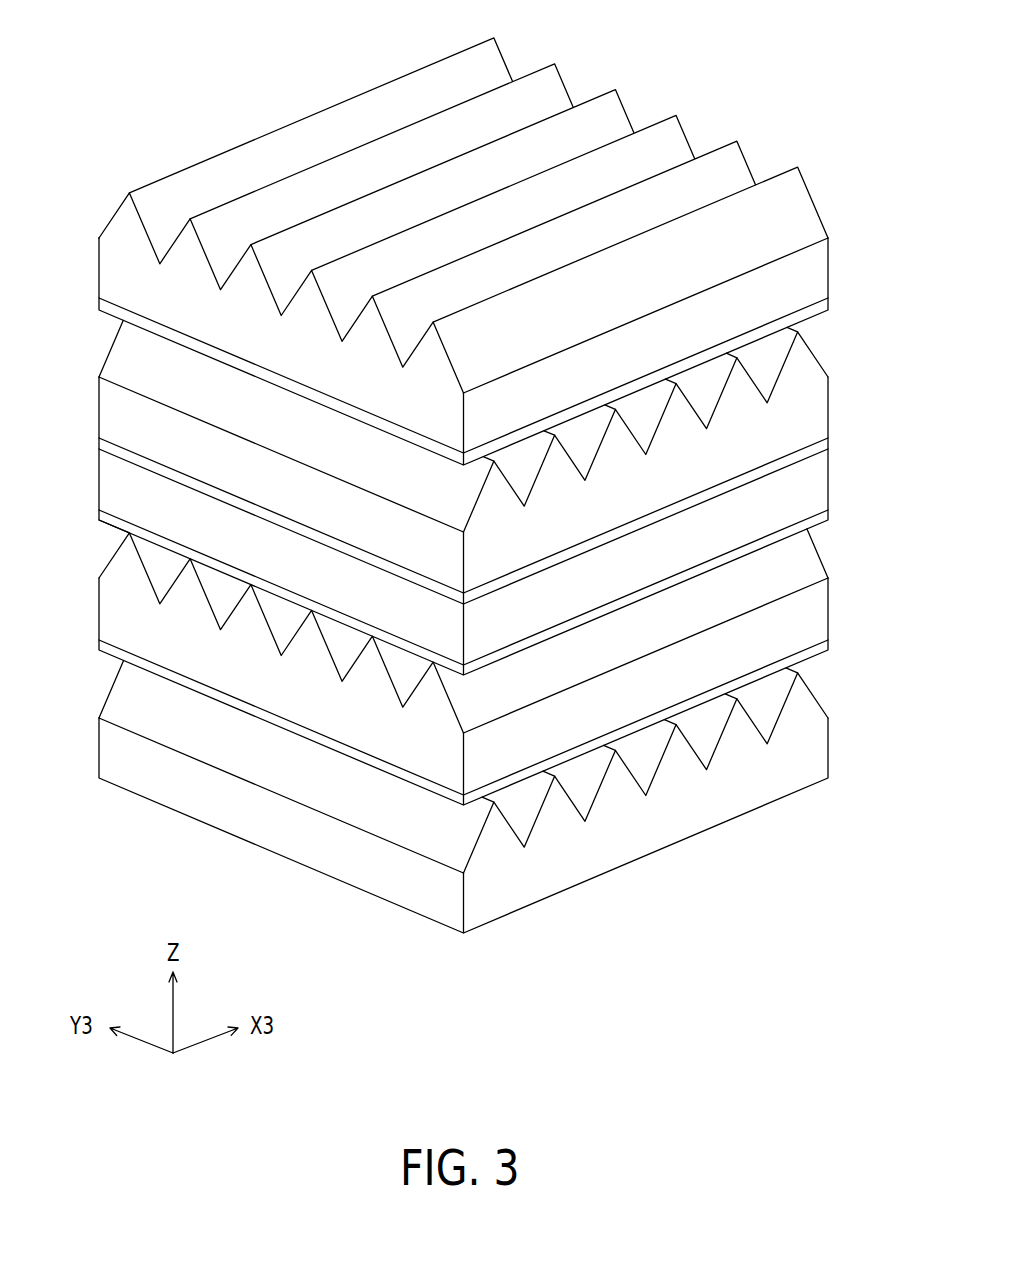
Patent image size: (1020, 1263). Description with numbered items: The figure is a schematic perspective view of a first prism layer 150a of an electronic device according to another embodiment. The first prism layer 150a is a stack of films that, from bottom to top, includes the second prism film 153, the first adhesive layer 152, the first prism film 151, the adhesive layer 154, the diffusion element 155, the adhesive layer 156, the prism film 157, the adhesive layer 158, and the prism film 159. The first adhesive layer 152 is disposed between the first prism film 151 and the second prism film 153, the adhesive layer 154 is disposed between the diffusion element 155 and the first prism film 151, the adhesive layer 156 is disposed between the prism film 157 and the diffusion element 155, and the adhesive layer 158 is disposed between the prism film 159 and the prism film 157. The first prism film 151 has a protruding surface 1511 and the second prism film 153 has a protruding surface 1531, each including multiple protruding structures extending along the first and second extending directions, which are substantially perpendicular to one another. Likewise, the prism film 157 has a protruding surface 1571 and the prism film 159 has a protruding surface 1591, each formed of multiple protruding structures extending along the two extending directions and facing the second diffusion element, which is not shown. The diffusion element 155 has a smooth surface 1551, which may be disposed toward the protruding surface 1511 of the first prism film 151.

The first prism layer 150a is at (868, 893).
The prism film 159 is at (812, 277).
The protruding surface 1591 is at (812, 146).
The adhesive layer 158 is at (812, 308).
The prism film 157 is at (812, 414).
The protruding surface 1571 is at (827, 340).
The adhesive layer 156 is at (812, 447).
The diffusion element 155 is at (812, 487).
The smooth surface 1551 is at (104, 528).
The adhesive layer 154 is at (812, 522).
The first prism film 151 is at (812, 615).
The protruding surface 1511 is at (90, 560).
The first adhesive layer 152 is at (812, 650).
The second prism film 153 is at (812, 750).
The protruding surface 1531 is at (448, 832).